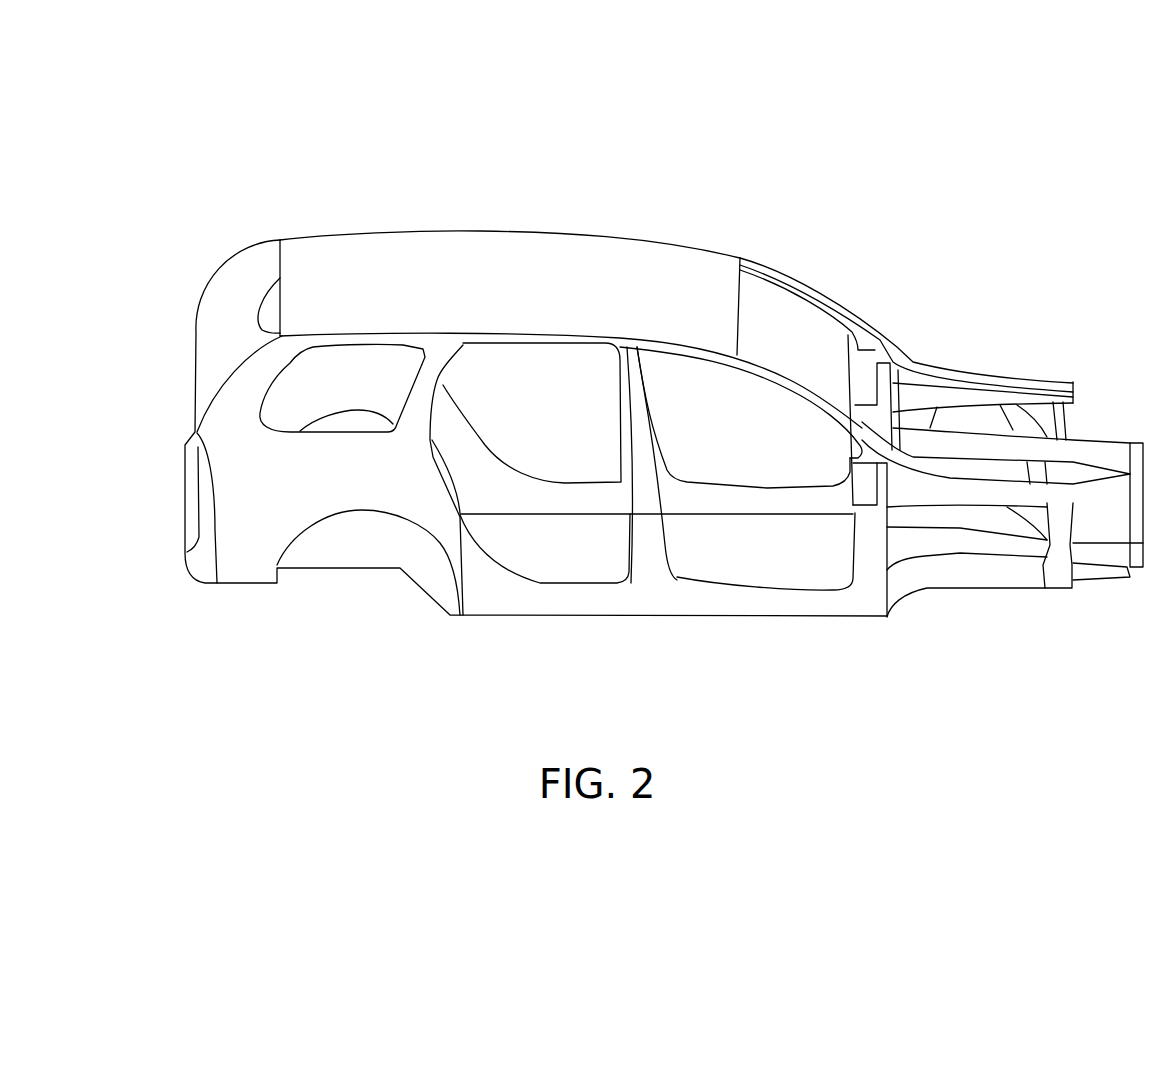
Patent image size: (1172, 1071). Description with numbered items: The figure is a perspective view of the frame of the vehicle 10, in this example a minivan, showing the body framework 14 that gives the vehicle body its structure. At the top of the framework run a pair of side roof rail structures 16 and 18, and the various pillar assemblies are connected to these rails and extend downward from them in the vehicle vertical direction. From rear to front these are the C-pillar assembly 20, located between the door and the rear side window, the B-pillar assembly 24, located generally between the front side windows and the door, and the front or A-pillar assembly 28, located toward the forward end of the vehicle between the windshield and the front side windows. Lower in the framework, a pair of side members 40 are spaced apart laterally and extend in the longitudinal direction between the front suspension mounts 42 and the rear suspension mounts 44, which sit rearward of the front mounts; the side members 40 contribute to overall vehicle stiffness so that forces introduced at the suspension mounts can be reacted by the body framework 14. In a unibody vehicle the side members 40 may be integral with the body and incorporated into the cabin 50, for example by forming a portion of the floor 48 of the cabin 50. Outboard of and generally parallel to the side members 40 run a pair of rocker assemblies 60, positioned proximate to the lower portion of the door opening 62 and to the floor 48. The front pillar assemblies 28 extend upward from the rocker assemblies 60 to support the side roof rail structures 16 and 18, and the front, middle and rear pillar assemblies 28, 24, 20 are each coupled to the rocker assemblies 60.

The vehicle 10 is at (357, 173).
The body framework 14 is at (630, 235).
The side roof rail structure 16 is at (543, 232).
The side roof rail structure 18 is at (495, 336).
The C-pillar assembly 20 is at (423, 383).
The B-pillar assembly 24 is at (622, 434).
The front pillar assembly 28 is at (868, 350).
The side member 40 is at (1087, 452).
The front suspension mount 42 is at (1072, 600).
The rear suspension mount 44 is at (350, 572).
The floor 48 is at (697, 572).
The cabin 50 is at (787, 332).
The rocker assembly 60 is at (693, 505).
The door opening 62 is at (800, 575).